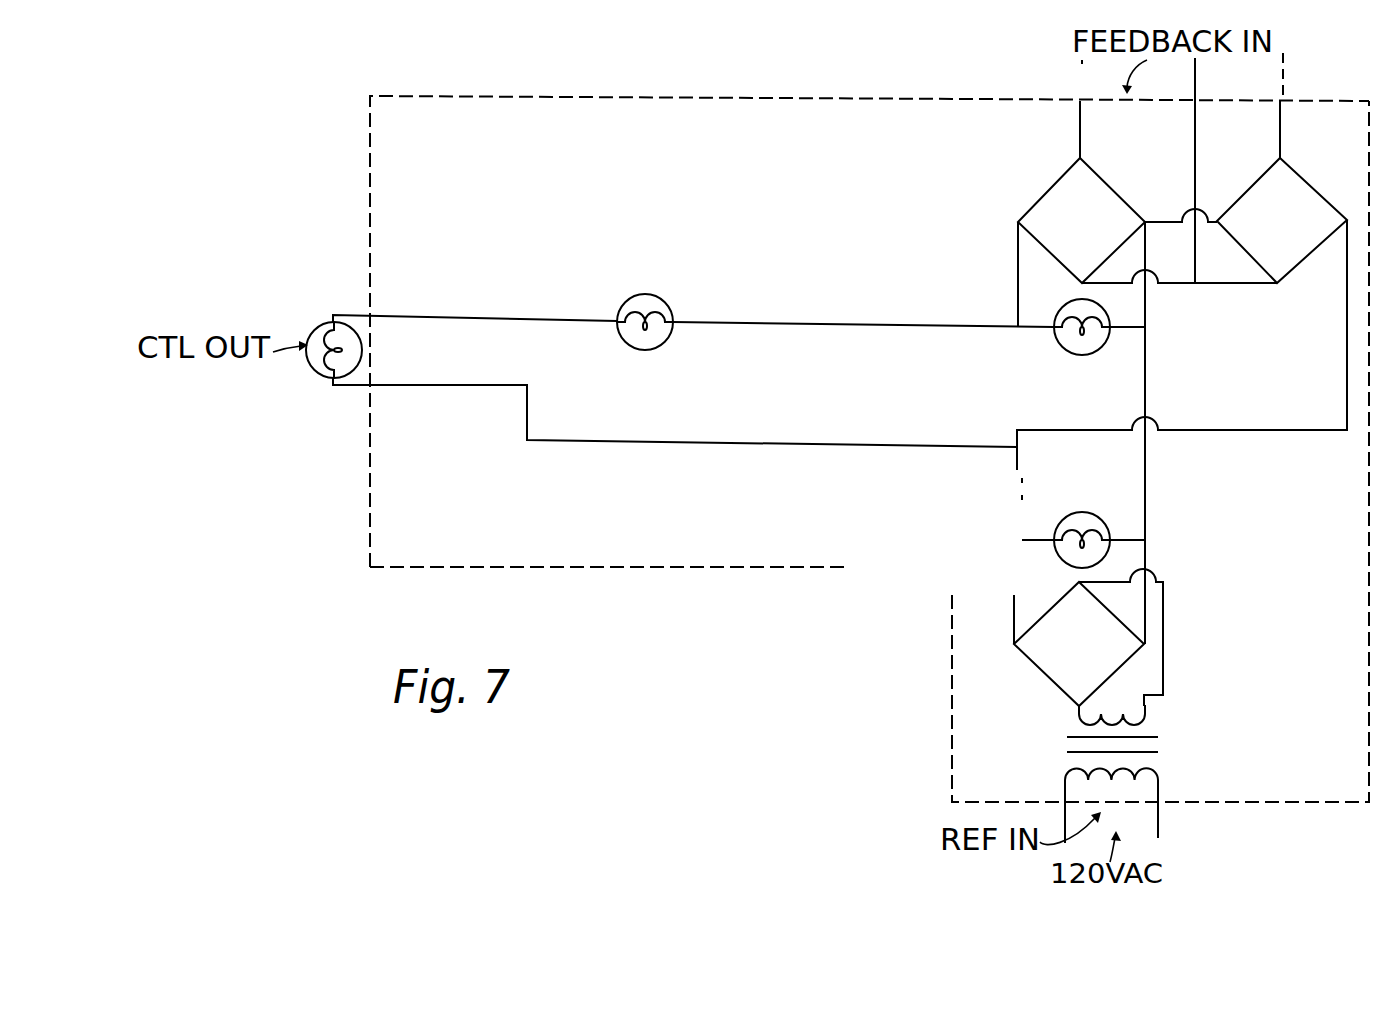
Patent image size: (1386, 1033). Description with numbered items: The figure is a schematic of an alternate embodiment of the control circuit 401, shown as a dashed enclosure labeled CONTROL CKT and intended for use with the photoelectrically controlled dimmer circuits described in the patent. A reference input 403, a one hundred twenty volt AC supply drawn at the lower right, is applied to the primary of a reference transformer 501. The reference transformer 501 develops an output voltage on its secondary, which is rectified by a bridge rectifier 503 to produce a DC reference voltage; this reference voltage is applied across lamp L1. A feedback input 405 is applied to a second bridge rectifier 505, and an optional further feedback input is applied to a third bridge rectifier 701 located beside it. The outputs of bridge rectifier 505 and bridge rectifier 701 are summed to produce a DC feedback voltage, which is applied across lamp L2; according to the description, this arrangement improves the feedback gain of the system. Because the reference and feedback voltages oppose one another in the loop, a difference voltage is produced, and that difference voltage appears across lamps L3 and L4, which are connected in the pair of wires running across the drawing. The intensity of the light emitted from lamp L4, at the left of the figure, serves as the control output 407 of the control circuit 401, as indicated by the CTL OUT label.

The control circuit 401 is at (695, 90).
The reference input 403 is at (1159, 809).
The feedback input 405 is at (1039, 70).
The control output 407 is at (358, 306).
The reference transformer 501 is at (1060, 746).
The bridge rectifier 503 is at (1026, 651).
The bridge rectifier 505 is at (1020, 224).
The bridge rectifier 701 is at (1306, 186).
The lamp L1 is at (1064, 517).
The lamp L2 is at (1057, 341).
The lamp L3 is at (657, 290).
The lamp L4 is at (323, 381).